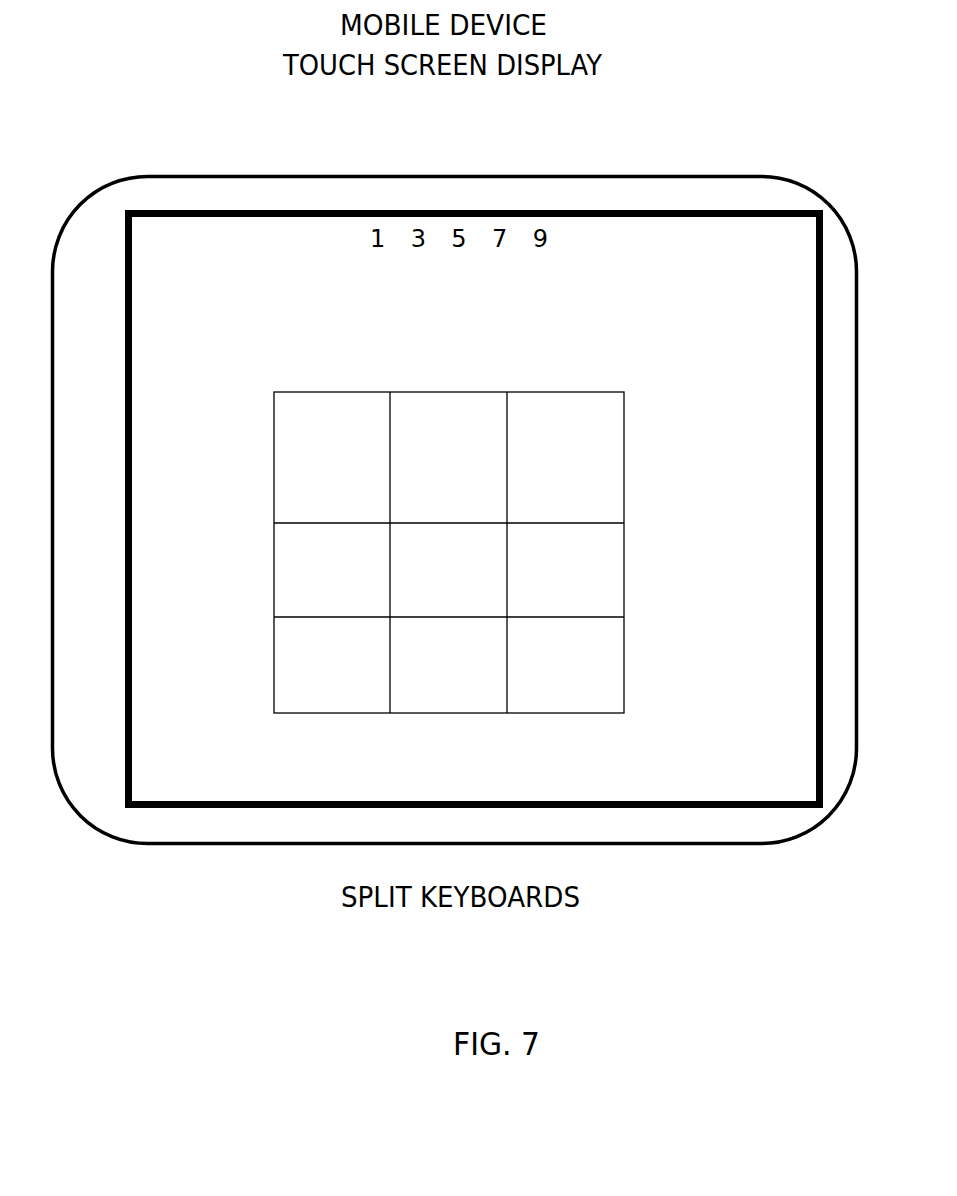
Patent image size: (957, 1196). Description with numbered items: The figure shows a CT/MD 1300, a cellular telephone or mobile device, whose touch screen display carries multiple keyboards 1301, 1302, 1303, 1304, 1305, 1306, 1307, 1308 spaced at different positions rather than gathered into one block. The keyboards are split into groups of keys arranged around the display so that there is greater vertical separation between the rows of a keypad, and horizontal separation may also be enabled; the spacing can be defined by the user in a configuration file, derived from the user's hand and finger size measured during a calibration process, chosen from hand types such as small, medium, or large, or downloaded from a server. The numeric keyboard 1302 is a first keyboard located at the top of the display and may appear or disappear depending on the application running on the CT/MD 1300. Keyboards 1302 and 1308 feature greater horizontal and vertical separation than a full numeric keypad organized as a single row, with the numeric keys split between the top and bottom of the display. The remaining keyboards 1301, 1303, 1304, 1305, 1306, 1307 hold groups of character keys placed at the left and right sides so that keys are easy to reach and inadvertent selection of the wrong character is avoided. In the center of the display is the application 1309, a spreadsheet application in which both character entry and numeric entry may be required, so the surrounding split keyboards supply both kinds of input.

The CT/MD 1300 is at (707, 195).
The keyboard 1301 is at (235, 195).
The numeric keyboard 1302 is at (462, 210).
The keyboard 1303 is at (694, 260).
The keyboard 1304 is at (703, 523).
The keyboard 1305 is at (660, 765).
The keyboard 1306 is at (175, 741).
The keyboard 1307 is at (222, 525).
The keyboard 1308 is at (380, 757).
The application 1309 is at (471, 398).